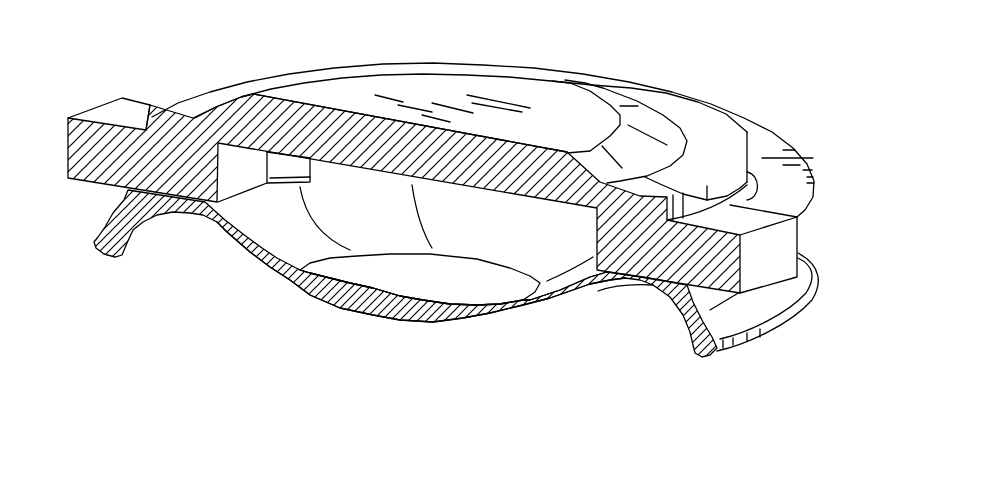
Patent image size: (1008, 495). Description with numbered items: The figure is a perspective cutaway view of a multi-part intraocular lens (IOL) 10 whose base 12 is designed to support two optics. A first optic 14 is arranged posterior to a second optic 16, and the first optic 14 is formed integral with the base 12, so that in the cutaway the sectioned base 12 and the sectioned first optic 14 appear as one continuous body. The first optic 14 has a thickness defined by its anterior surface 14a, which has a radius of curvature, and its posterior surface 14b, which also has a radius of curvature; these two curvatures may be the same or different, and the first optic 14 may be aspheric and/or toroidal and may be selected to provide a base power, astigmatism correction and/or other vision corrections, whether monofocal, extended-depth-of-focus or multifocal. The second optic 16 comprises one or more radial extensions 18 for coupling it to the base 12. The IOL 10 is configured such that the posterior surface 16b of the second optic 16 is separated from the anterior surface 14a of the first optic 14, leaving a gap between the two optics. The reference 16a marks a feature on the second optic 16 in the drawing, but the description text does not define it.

The multi-part intraocular lens 10 is at (724, 29).
The base 12 is at (817, 184).
The first optic 14 is at (323, 287).
The anterior surface 14a is at (548, 305).
The posterior surface 14b is at (395, 321).
The second optic 16 is at (673, 102).
The upper surface of inner ring 16a is at (280, 90).
The posterior surface 16b is at (297, 168).
The radial extension 18 is at (108, 112).